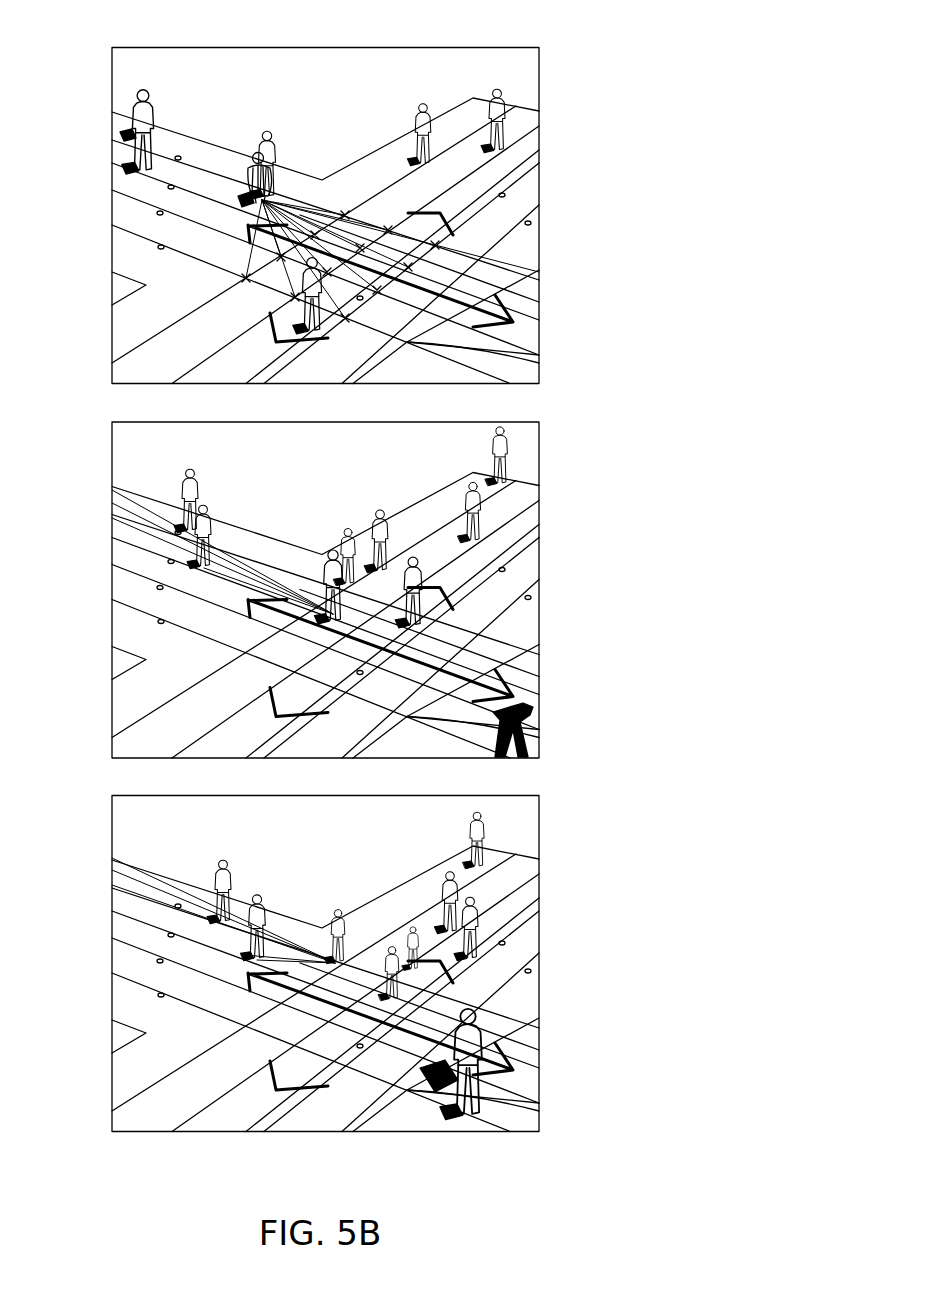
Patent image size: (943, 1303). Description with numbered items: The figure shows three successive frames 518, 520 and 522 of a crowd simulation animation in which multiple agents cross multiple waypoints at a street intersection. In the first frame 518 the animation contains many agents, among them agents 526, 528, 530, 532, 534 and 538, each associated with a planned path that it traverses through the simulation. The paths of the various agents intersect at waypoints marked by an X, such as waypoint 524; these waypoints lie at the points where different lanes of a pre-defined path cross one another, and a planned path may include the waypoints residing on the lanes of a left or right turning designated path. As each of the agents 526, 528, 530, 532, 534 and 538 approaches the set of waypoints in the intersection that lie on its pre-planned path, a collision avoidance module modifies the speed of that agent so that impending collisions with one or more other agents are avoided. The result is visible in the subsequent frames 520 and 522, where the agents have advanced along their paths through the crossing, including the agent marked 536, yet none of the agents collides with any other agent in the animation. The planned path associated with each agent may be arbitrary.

The frame 518 is at (507, 48).
The frame 520 is at (507, 422).
The frame 522 is at (507, 796).
The waypoint 524 is at (437, 244).
The agent 526 is at (517, 100).
The agent 528 is at (430, 104).
The agent 530 is at (267, 130).
The agent 532 is at (140, 88).
The agent 534 is at (127, 137).
The tracked pedestrian 536 is at (255, 154).
The agent 538 is at (295, 296).